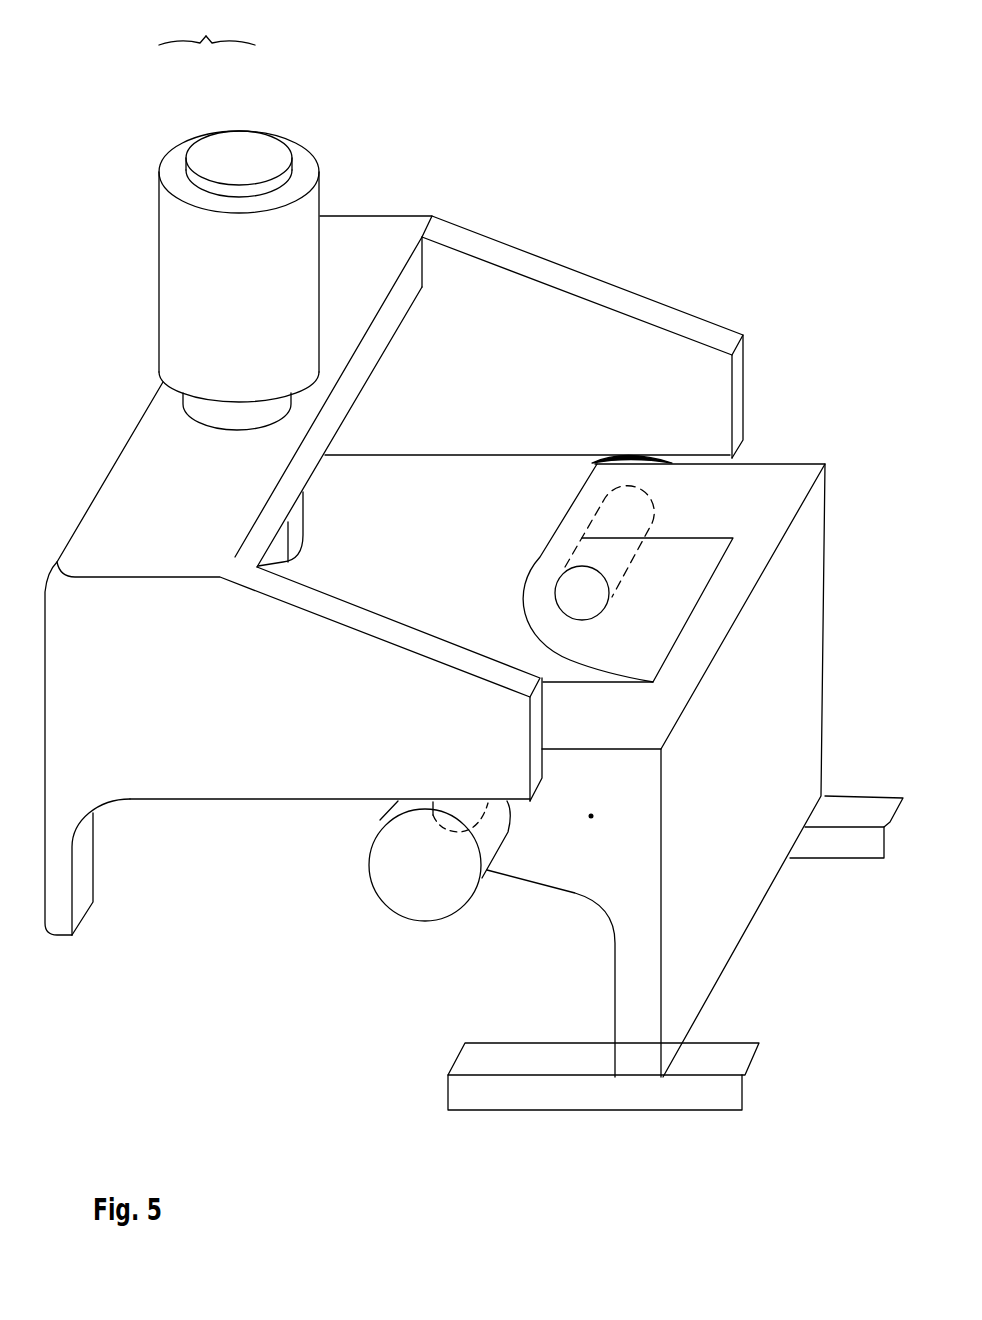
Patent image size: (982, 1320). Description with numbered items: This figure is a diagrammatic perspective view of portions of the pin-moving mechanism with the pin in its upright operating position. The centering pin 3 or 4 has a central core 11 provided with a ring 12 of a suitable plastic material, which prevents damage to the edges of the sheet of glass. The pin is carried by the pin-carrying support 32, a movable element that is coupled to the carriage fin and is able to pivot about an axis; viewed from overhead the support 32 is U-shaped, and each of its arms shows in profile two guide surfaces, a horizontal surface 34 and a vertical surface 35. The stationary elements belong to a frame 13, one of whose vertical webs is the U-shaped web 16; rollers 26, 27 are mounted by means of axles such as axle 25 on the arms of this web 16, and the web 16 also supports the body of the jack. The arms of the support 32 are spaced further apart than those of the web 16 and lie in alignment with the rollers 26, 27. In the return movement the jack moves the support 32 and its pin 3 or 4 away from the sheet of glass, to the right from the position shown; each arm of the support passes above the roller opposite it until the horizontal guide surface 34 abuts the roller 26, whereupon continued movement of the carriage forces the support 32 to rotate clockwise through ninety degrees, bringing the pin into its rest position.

The centering pin 3 is at (230, 26).
The centering pin 4 is at (182, 26).
The central core 11 is at (235, 155).
The ring 12 is at (173, 162).
The frame 13 is at (715, 1061).
The web 16 is at (591, 816).
The axle 25 is at (637, 522).
The roller 26 is at (427, 893).
The roller 27 is at (687, 457).
The pin-carrying support 32 is at (446, 412).
The horizontal guide surface 34 is at (173, 877).
The vertical guide surface 35 is at (508, 455).